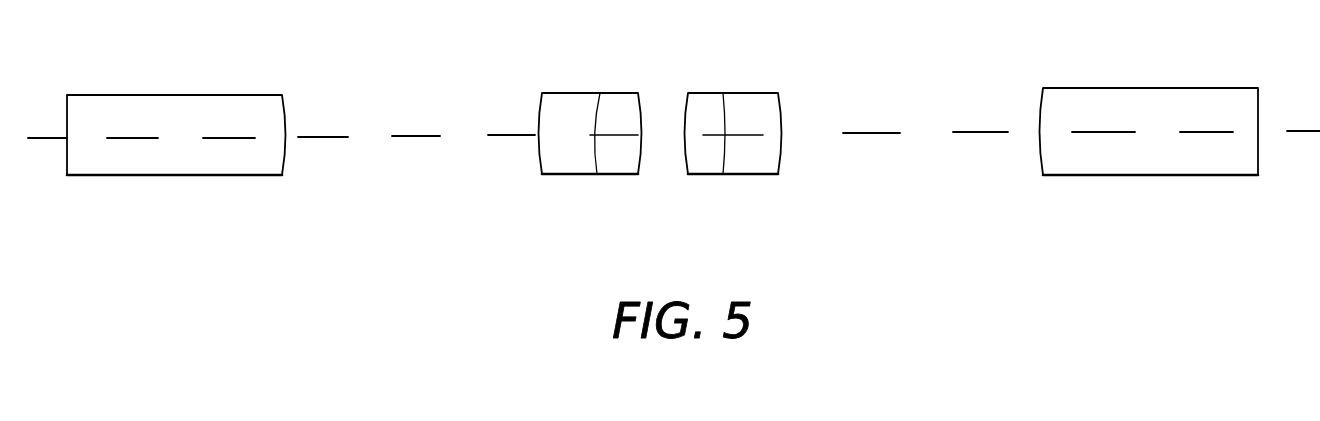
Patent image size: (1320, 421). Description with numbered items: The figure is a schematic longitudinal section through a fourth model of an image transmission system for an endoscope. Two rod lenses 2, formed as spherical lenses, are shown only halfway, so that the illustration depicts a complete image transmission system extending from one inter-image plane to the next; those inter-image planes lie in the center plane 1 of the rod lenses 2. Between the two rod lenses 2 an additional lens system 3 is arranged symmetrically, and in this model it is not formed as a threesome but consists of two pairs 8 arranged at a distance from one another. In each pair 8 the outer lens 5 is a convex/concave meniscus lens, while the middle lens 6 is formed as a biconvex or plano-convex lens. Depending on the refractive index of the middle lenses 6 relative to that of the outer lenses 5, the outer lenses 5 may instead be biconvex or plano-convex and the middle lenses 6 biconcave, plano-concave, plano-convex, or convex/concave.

The center plane 1 is at (68, 155).
The rod lens 2 is at (229, 192).
The additional lens system 3 is at (653, 133).
The outer lens 5 is at (570, 153).
The middle lens 6 is at (618, 158).
The pair 8 is at (525, 181).